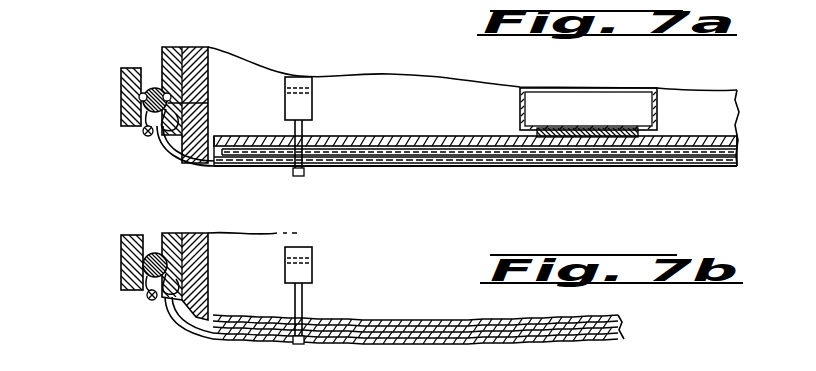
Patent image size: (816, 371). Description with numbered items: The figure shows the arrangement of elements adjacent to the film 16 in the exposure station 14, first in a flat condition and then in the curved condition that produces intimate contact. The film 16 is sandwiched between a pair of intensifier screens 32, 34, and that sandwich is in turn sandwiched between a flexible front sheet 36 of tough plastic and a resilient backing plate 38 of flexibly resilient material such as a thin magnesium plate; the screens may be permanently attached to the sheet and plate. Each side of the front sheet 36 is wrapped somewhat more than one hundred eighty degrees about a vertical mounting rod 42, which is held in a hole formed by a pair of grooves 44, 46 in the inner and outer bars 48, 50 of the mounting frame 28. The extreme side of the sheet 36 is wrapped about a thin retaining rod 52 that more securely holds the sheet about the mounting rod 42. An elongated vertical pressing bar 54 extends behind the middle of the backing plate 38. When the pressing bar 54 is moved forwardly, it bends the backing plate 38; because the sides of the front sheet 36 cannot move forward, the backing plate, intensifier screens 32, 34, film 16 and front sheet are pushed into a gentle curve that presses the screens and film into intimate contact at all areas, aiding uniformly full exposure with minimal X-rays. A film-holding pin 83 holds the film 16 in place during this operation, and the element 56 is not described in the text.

In FIG. 7A, the exposure station 14 is at (397, 102).
In FIG. 7A, the film 16 is at (405, 166).
In FIG. 7B, the film 16 is at (395, 343).
In FIG. 7A, the mounting frame 28 is at (210, 60).
In FIG. 7A, the intensifier screen 32 is at (476, 150).
In FIG. 7B, the intensifier screen 32 is at (450, 339).
In FIG. 7A, the intensifier screen 34 is at (490, 156).
In FIG. 7B, the intensifier screen 34 is at (420, 327).
In FIG. 7A, the front sheet 36 is at (340, 166).
In FIG. 7B, the front sheet 36 is at (510, 342).
In FIG. 7A, the backing plate 38 is at (360, 136).
In FIG. 7B, the backing plate 38 is at (378, 319).
In FIG. 7A, the mounting rod 42 is at (150, 89).
In FIG. 7B, the mounting rod 42 is at (143, 269).
In FIG. 7A, the groove 44 is at (172, 103).
In FIG. 7A, the groove 46 is at (139, 97).
In FIG. 7A, the inner bar 48 is at (178, 116).
In FIG. 7A, the outer bar 50 is at (121, 118).
In FIG. 7A, the retaining rod 52 is at (146, 137).
In FIG. 7A, the pressing bar 54 is at (553, 138).
In FIG. 7A, the recess box 56 is at (658, 100).
In FIG. 7A, the film-holding pin 83 is at (298, 177).
In FIG. 7B, the film-holding pin 83 is at (304, 302).